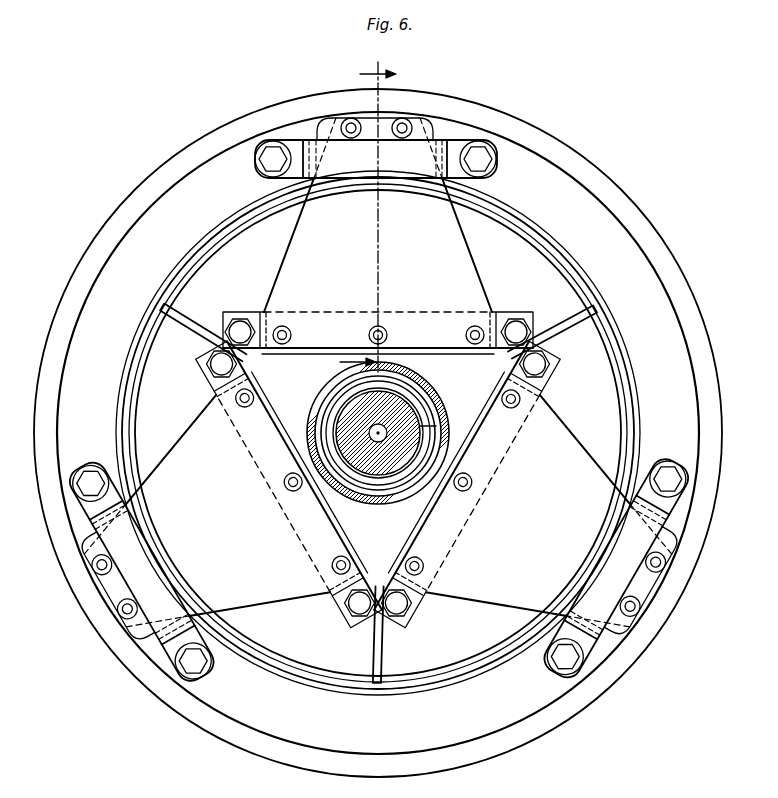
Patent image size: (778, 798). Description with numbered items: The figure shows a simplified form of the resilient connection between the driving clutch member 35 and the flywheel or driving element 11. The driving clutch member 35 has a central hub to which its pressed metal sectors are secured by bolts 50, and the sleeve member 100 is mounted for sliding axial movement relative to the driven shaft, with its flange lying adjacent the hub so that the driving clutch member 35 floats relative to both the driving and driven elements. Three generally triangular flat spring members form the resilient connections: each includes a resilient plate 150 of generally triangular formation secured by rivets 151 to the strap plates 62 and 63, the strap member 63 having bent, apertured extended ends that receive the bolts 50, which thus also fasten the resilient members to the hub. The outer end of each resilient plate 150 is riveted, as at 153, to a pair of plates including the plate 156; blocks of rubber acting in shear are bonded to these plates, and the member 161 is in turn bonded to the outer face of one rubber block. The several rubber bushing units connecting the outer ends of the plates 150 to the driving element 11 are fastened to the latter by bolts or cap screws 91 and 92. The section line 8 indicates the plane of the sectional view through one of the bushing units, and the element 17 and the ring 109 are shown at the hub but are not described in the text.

The section line 8- 8 is at (360, 218).
The driving element 11 is at (620, 208).
The hub shaft 17 is at (367, 470).
The driving clutch member 35 is at (577, 273).
The bolts 50 is at (515, 317).
The strap member 62 is at (312, 349).
The strap member 63 is at (452, 311).
The bolts or cap screws 91 is at (483, 147).
The bolts or cap screws 92 is at (270, 150).
The sleeve member 100 is at (433, 398).
The hub inner ring 109 is at (405, 390).
The resilient plate 150 is at (432, 212).
The rivets 151 is at (286, 327).
The rivets 153 is at (351, 118).
The plate 156 is at (384, 125).
The member 161 is at (372, 172).